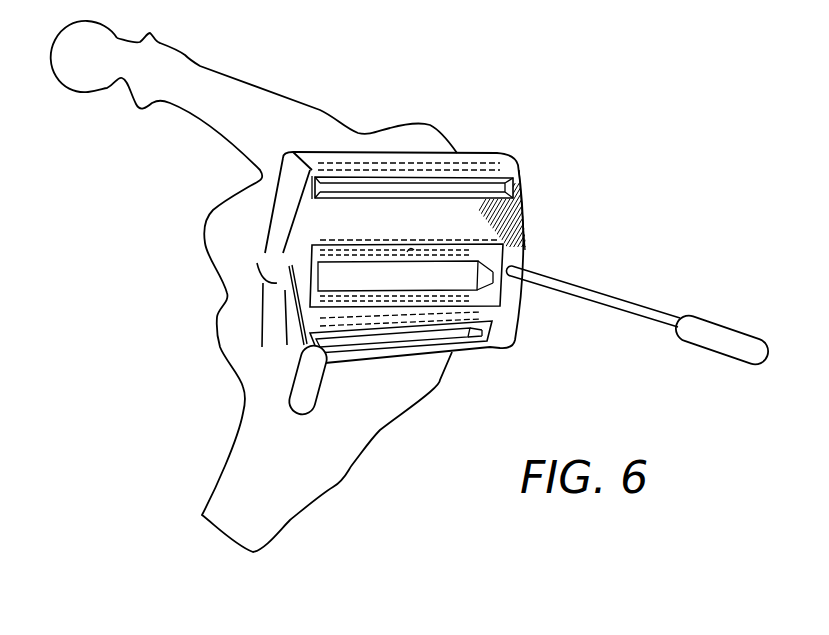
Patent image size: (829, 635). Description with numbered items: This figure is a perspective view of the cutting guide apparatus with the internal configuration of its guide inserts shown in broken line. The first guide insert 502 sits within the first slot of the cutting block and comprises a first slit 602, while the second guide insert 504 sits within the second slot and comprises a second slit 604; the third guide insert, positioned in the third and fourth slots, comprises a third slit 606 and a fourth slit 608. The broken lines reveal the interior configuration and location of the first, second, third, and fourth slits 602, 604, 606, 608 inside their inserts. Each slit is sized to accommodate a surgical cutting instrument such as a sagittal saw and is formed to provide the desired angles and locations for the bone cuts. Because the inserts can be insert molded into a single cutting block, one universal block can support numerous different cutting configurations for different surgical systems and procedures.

The first guide insert 502 is at (490, 185).
The second guide insert 504 is at (470, 333).
The first slit 602 is at (310, 181).
The second slit 604 is at (297, 327).
The third slit 606 is at (300, 281).
The fourth slit 608 is at (297, 257).